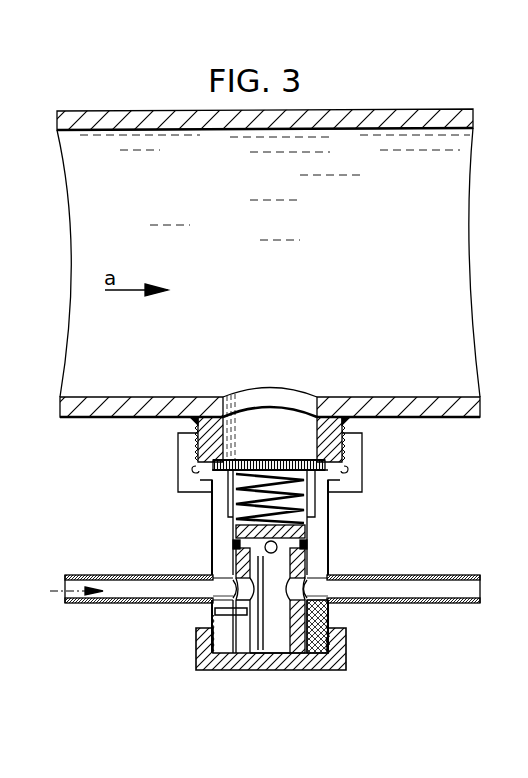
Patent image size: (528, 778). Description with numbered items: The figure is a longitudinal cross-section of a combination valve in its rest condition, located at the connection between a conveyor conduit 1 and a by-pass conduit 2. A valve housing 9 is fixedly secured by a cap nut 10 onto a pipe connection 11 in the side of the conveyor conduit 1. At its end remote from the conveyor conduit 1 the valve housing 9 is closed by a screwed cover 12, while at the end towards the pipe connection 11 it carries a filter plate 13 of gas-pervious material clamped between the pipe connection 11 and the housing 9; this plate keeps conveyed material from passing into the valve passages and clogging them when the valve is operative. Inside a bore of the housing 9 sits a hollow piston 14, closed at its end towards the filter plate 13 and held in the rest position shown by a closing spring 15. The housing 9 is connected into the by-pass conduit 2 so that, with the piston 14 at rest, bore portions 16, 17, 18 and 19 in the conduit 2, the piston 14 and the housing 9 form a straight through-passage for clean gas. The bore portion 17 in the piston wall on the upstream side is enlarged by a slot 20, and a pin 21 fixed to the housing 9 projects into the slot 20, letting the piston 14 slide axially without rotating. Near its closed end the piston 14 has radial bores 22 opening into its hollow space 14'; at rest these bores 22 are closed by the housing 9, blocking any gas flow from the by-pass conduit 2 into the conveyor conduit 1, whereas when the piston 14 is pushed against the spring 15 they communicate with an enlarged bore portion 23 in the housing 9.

The conveyor conduit 1 is at (290, 306).
The by-pass conduit 2 is at (113, 594).
The valve housing 9 is at (218, 541).
The cap nut 10 is at (178, 464).
The pipe connection 11 is at (348, 451).
The screwed cover 12 is at (240, 668).
The filter plate 13 is at (285, 462).
The piston 14 is at (351, 648).
The hollow space 14' is at (270, 675).
The closing spring 15 is at (320, 504).
The bore portion 16 is at (213, 601).
The bore portion 17 is at (233, 566).
The bore portion 18 is at (330, 569).
The bore portion 19 is at (335, 603).
The slot 20 is at (263, 634).
The pin 21 is at (222, 610).
The radial bores 22 is at (308, 546).
The enlarged bore portion 23 is at (233, 505).